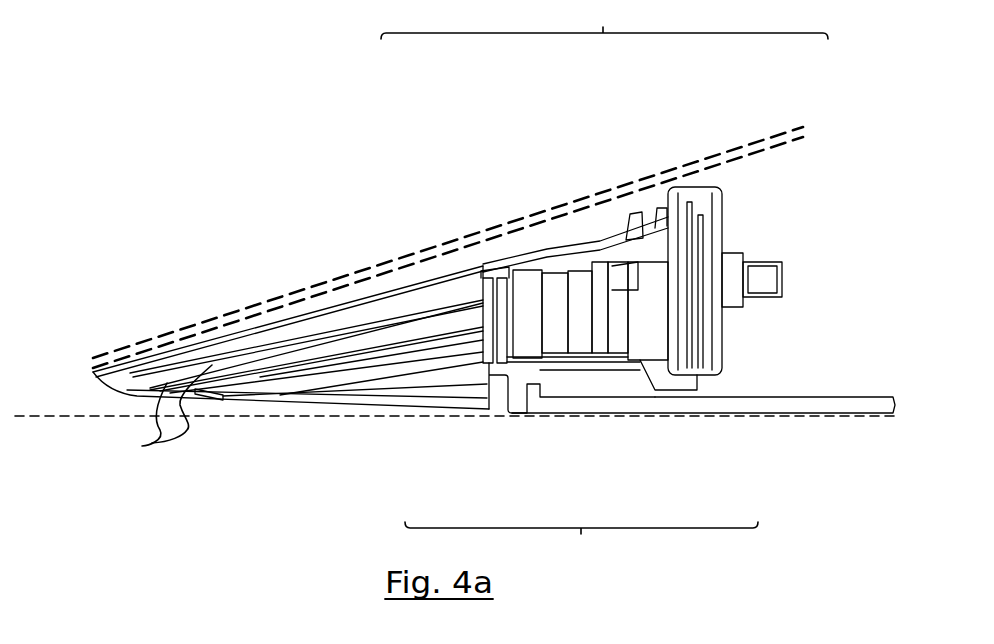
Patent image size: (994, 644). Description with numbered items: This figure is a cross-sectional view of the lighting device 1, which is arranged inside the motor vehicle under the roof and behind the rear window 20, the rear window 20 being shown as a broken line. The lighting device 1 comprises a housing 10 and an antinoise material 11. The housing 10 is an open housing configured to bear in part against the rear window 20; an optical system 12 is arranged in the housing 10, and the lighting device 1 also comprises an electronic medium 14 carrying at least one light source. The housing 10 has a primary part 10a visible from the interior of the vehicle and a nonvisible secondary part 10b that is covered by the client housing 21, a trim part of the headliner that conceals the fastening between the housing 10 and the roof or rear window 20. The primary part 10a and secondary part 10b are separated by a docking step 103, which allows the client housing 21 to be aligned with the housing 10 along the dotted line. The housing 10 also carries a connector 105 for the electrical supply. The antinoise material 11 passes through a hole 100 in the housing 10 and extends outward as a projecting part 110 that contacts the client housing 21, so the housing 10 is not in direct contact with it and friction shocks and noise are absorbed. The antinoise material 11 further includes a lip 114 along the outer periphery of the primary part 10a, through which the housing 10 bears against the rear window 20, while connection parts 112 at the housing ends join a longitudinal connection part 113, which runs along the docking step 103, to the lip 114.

The lighting device 1 is at (248, 154).
The housing 10 is at (604, 22).
The primary part 10a is at (423, 365).
The secondary part 10b is at (710, 248).
The hole 100 is at (645, 373).
The docking step 103 is at (497, 387).
The optical system 12 is at (530, 281).
The electronic medium 14 is at (623, 287).
The connector 105 is at (760, 277).
The rear window 20 is at (187, 337).
The client housing 21 is at (803, 403).
The antinoise material 11 is at (581, 545).
The projecting part 110 is at (677, 387).
The connection part 112 is at (692, 305).
The longitudinal connection part 113 is at (513, 363).
The lip 114 is at (440, 524).